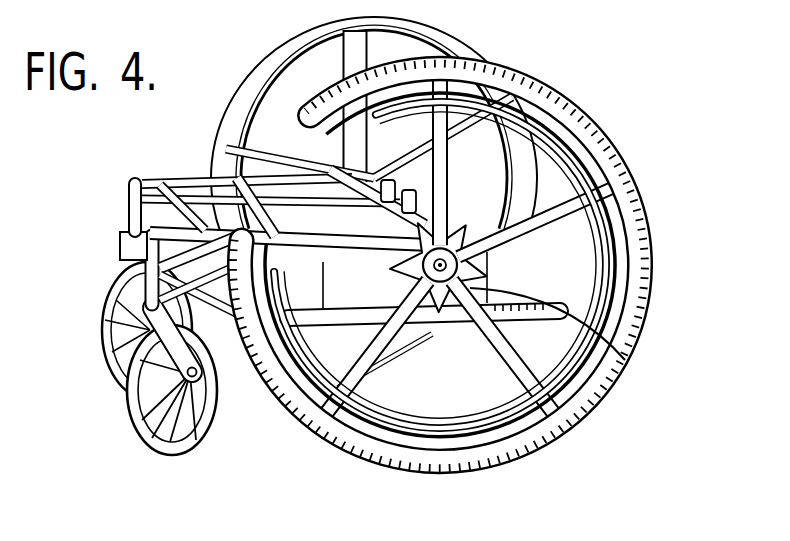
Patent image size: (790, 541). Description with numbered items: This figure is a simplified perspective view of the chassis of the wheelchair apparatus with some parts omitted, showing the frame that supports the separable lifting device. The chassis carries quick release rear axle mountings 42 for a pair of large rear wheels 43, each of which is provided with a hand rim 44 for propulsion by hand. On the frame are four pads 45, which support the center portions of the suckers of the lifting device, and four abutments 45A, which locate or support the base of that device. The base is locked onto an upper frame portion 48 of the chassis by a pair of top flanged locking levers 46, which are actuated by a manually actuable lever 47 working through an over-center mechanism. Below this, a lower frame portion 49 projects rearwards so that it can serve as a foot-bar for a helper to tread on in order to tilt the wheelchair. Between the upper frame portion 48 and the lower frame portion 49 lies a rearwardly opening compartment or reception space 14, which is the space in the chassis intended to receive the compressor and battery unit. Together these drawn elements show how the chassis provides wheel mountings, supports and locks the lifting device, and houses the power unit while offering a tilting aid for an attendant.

The reception space 14 is at (470, 246).
The quick release rear axle mountings 42 is at (625, 360).
The large rear wheels 43 is at (460, 266).
The hand rims 44 is at (491, 265).
The pads 45 is at (175, 181).
The abutments 45A is at (170, 198).
The top flanged locking levers 46 is at (278, 150).
The manually actuable lever 47 is at (538, 234).
The upper frame portion 48 is at (173, 239).
The lower frame portion 49 is at (456, 326).